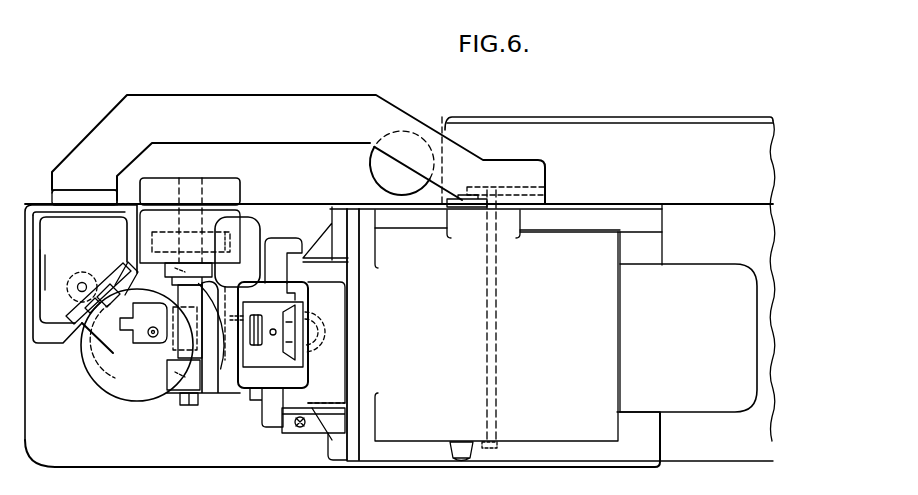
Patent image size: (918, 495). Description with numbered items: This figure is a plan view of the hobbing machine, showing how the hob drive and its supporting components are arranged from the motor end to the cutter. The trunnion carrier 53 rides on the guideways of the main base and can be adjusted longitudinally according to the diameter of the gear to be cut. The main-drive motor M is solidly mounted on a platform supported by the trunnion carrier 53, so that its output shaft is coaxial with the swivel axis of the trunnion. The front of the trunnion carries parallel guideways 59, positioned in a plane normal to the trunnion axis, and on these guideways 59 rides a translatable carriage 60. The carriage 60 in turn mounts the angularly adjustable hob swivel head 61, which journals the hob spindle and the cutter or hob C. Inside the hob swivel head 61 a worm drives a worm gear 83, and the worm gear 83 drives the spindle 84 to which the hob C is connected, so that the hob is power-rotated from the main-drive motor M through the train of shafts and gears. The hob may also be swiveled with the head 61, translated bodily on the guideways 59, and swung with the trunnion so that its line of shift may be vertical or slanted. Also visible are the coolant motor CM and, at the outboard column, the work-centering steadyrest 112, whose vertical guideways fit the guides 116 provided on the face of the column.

The trunnion carrier 53 is at (496, 325).
The parallel guideways 59 is at (290, 293).
The translatable carriage 60 is at (278, 245).
The hob swivel head 61 is at (230, 385).
The worm gear 83 is at (162, 236).
The spindle 84 is at (199, 188).
The outboard work-centering steadyrest 112 is at (120, 345).
The guides 116 is at (87, 327).
The hob C is at (175, 338).
The coolant motor CM is at (374, 168).
The main-drive motor M is at (688, 338).